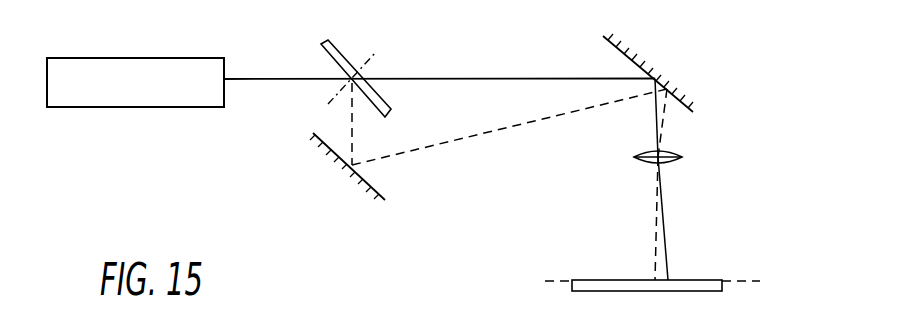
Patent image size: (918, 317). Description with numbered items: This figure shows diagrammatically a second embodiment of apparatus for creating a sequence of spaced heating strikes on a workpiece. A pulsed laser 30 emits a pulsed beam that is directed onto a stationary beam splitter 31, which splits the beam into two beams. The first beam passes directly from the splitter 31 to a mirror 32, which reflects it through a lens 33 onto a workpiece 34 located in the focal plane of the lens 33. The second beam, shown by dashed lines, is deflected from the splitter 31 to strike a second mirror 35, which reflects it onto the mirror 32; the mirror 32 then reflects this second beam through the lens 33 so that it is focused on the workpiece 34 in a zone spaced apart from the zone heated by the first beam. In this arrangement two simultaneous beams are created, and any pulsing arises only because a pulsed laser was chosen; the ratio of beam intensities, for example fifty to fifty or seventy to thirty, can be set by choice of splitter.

The pulsed laser 30 is at (132, 57).
The beam splitter 31 is at (433, 62).
The mirror 32 is at (702, 71).
The lens 33 is at (721, 164).
The workpiece 34 is at (604, 280).
The second mirror 35 is at (314, 180).